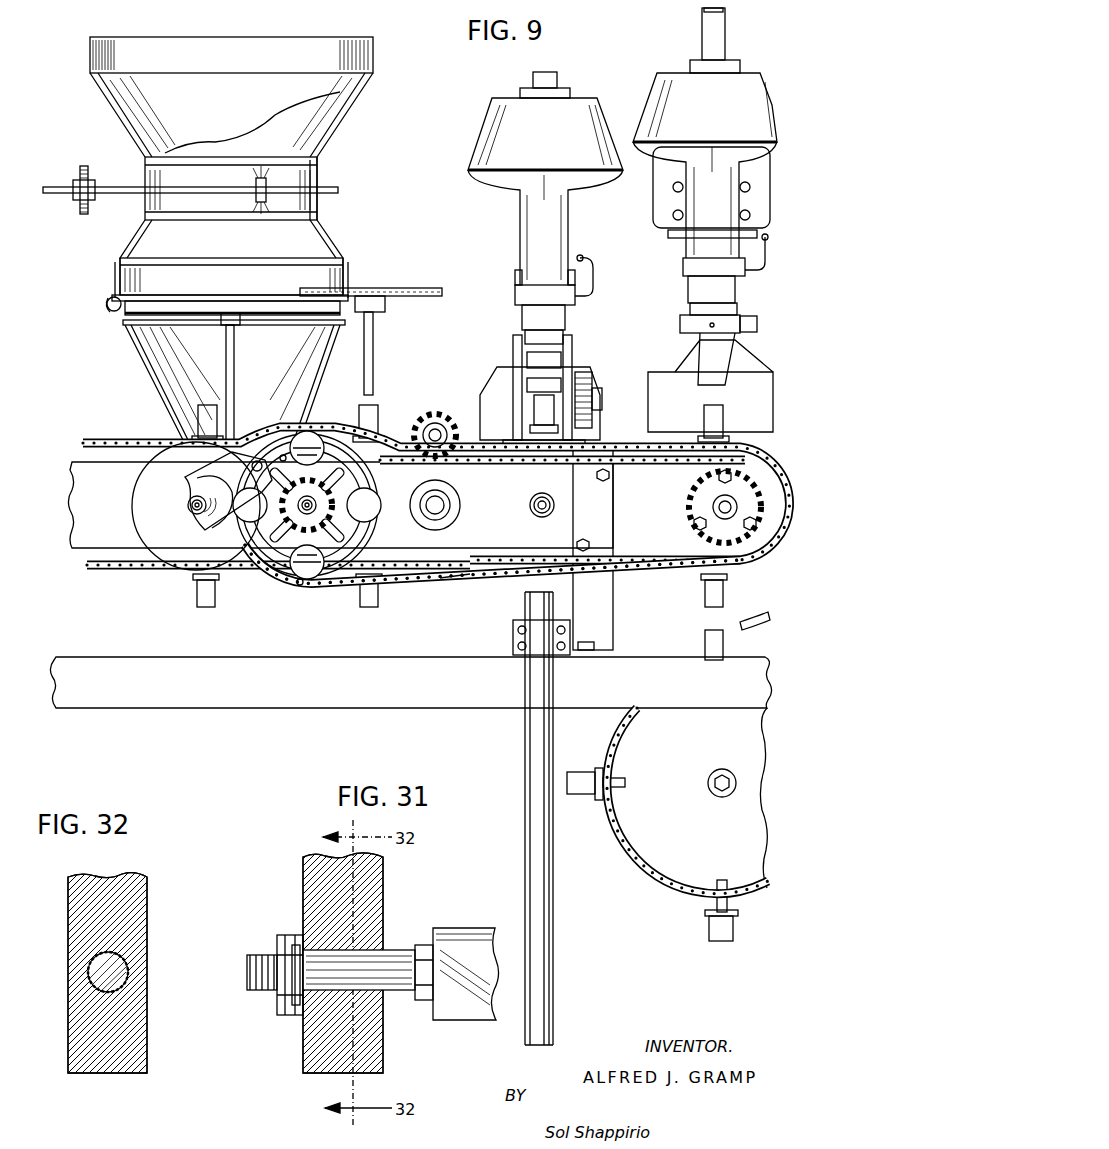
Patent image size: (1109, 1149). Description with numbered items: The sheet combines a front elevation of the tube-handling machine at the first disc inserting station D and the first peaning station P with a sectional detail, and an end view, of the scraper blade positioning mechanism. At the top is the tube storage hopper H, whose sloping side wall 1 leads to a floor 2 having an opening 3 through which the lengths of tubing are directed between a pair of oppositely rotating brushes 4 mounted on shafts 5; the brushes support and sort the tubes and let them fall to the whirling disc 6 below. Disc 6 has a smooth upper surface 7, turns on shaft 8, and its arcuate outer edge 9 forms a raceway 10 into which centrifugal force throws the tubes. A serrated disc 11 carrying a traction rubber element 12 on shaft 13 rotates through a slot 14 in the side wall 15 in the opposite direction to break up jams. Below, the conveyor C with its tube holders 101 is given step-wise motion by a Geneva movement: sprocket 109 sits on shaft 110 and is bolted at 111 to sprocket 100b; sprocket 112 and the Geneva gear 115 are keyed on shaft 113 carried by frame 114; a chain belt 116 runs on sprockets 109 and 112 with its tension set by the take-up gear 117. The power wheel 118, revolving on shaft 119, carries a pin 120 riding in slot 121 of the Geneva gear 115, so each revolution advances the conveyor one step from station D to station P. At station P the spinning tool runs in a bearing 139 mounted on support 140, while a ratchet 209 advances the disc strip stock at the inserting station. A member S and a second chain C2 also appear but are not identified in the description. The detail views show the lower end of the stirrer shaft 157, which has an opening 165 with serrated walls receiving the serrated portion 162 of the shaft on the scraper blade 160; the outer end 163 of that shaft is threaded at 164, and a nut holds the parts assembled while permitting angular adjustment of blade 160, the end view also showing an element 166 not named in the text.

In FIG. 9, the hopper H is at (112, 146).
In FIG. 9, the sloping side wall 1 is at (327, 132).
In FIG. 9, the floor 2 is at (200, 150).
In FIG. 9, the opening 3 is at (261, 170).
In FIG. 9, the brushes 4 is at (231, 207).
In FIG. 9, the shafts 5 is at (110, 196).
In FIG. 9, the whirling disc 6 is at (197, 305).
In FIG. 9, the smooth upper surface 7 is at (248, 305).
In FIG. 9, the shaft 8 is at (236, 348).
In FIG. 9, the outer edge 9 is at (116, 310).
In FIG. 9, the raceway 10 is at (113, 296).
In FIG. 9, the serrated disc 11 is at (398, 286).
In FIG. 9, the traction rubber element 12 is at (400, 300).
In FIG. 9, the shaft 13 is at (373, 340).
In FIG. 9, the slot 14 is at (343, 272).
In FIG. 9, the side wall 15 is at (118, 260).
In FIG. 9, the holder 101 is at (212, 400).
In FIG. 9, the take-up gear 117 is at (448, 414).
In FIG. 9, the ratchet 209 is at (588, 390).
In FIG. 9, the disc inserting station D is at (518, 245).
In FIG. 9, the peaning station P is at (655, 226).
In FIG. 9, the support 140 is at (672, 330).
In FIG. 9, the bearing 139 is at (690, 360).
In FIG. 9, the conveyor C is at (106, 440).
In FIG. 9, the wheel 118 is at (138, 488).
In FIG. 9, the shaft 119 is at (190, 508).
In FIG. 9, the pin 120 is at (250, 466).
In FIG. 9, the slot 121 is at (290, 460).
In FIG. 9, the sprocket 112 is at (404, 470).
In FIG. 9, the shaft 113 is at (305, 514).
In FIG. 9, the sprocket 109 is at (690, 476).
In FIG. 9, the shaft 110 is at (712, 508).
In FIG. 9, the bolts 111 is at (745, 520).
In FIG. 9, the frame 114 is at (70, 537).
In FIG. 9, the Geneva gear 115 is at (330, 582).
In FIG. 9, the chain belt 116 is at (428, 582).
In FIG. 9, the sprocket 100b is at (775, 545).
In FIG. 9, the support beam S is at (256, 708).
In FIG. 9, the second conveyor chain C2 is at (640, 862).
In FIG. 31, the stirrer shaft 157 is at (334, 1076).
In FIG. 32, the stirrer shaft 157 is at (100, 1076).
In FIG. 31, the scraper blade 160 is at (494, 928).
In FIG. 31, the serrations 162 is at (410, 1000).
In FIG. 31, the outer end 163 is at (240, 970).
In FIG. 31, the threaded end 164 is at (262, 995).
In FIG. 31, the opening 165 is at (376, 945).
In FIG. 32, the hole 166 is at (88, 968).